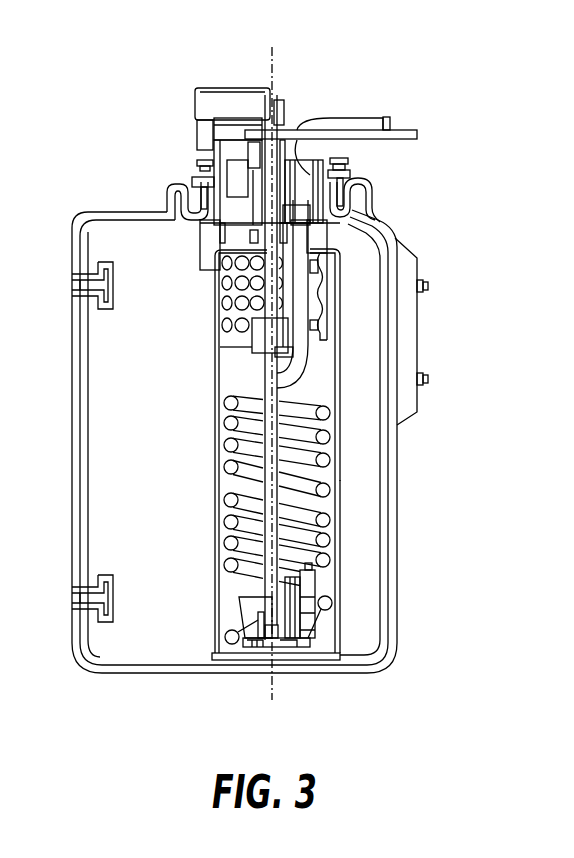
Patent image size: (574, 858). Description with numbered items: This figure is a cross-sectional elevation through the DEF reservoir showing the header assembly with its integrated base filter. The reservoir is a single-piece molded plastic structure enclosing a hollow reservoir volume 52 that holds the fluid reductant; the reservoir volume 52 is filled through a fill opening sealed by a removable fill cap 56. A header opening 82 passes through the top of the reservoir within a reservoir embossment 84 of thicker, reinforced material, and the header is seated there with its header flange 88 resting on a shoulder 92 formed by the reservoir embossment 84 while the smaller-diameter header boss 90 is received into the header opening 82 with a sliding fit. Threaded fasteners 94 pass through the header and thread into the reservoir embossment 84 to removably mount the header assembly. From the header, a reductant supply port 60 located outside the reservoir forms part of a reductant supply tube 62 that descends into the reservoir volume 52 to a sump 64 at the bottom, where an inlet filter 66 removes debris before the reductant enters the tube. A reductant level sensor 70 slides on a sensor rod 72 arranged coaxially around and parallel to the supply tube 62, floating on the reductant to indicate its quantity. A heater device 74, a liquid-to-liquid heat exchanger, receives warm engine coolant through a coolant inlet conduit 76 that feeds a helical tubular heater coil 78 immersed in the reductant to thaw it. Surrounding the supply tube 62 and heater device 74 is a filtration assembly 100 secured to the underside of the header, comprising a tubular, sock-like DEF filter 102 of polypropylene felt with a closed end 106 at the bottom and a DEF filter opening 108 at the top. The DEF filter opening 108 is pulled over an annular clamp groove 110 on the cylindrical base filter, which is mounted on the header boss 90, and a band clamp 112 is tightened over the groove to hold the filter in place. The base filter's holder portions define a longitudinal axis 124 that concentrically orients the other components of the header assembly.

The reservoir volume 52 is at (182, 628).
The fill cap 56 is at (230, 97).
The reductant supply port 60 is at (283, 108).
The reductant supply tube 62 is at (320, 431).
The sump 64 is at (253, 612).
The inlet filter 66 is at (272, 630).
The reductant level sensor 70 is at (240, 347).
The sensor rod 72 is at (268, 508).
The heater device 74 is at (362, 553).
The coolant inlet conduit 76 is at (331, 117).
The heater coil 78 is at (305, 518).
The header opening 82 is at (190, 223).
The reservoir embossment 84 is at (180, 203).
The header flange 88 is at (352, 170).
The header boss 90 is at (240, 170).
The shoulder 92 is at (180, 193).
The threaded fasteners 94 is at (203, 158).
The filtration assembly 100 is at (182, 300).
The DEF filter 102 is at (340, 357).
The closed end 106 is at (316, 660).
The DEF filter opening 108 is at (340, 282).
The clamp groove 110 is at (220, 250).
The band clamp 112 is at (340, 226).
The longitudinal axis 124 is at (276, 58).